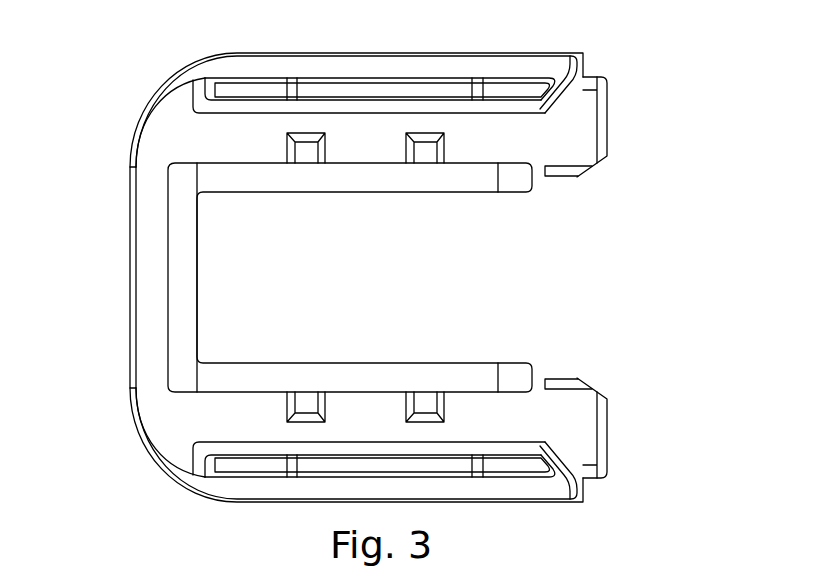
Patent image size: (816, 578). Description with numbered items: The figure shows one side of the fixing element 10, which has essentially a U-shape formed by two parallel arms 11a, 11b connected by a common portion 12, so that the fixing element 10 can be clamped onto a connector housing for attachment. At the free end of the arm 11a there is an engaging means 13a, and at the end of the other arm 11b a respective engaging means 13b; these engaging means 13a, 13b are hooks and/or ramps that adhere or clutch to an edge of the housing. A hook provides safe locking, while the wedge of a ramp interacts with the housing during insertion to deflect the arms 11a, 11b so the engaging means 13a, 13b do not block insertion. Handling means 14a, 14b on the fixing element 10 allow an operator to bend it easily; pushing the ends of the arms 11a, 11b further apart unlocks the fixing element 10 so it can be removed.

The fixing element 10 is at (107, 110).
The arm 11a is at (218, 425).
The arm 11b is at (248, 132).
The common portion 12 is at (157, 218).
The engaging means 13a is at (578, 387).
The engaging means 13b is at (578, 172).
The handling means 14a is at (565, 456).
The handling means 14b is at (585, 90).